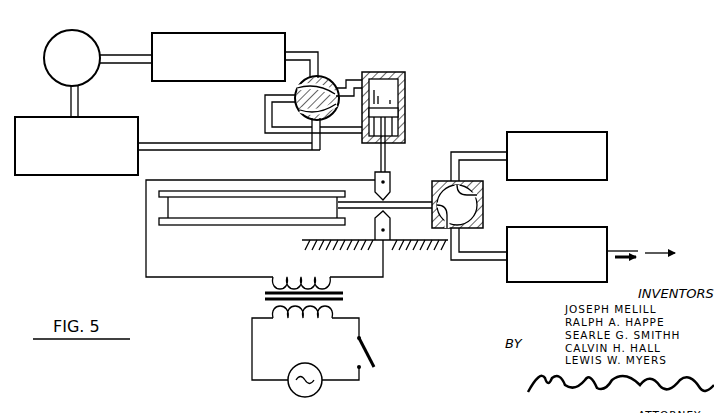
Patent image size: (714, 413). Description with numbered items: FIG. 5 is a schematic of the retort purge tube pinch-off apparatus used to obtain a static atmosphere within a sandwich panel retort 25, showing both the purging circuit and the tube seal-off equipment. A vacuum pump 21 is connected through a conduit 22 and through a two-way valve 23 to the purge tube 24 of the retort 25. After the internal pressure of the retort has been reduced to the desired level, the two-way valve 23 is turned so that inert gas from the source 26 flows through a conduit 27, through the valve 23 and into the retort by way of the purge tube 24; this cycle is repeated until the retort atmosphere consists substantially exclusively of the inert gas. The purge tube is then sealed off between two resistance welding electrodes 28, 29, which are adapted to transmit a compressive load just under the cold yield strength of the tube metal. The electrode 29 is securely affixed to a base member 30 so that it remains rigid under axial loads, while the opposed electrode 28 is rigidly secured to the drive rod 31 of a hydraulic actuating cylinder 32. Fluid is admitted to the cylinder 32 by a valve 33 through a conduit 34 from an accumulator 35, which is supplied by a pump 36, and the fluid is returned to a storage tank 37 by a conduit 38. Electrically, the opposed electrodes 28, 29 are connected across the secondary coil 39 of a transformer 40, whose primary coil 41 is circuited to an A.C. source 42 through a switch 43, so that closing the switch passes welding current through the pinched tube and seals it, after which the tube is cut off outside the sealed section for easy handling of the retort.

The vacuum pump 21 is at (582, 230).
The conduit 22 is at (482, 258).
The two-way valve 23 is at (483, 204).
The purge tube 24 is at (400, 205).
The retort 25 is at (236, 228).
The inert gas source 26 is at (588, 150).
The conduit 27 is at (473, 158).
The resistance welding electrode 28 is at (388, 183).
The resistance welding electrode 29 is at (378, 228).
The base member 30 is at (404, 246).
The drive rod 31 is at (381, 156).
The hydraulic actuating cylinder 32 is at (405, 100).
The valve 33 is at (326, 84).
The conduit 34 is at (298, 55).
The accumulator 35 is at (213, 42).
The pump 36 is at (82, 44).
The storage tank 37 is at (67, 163).
The conduit 38 is at (178, 147).
The secondary coil 39 is at (315, 276).
The transformer 40 is at (349, 294).
The primary coil 41 is at (300, 318).
The A.C. source 42 is at (291, 393).
The switch 43 is at (376, 353).